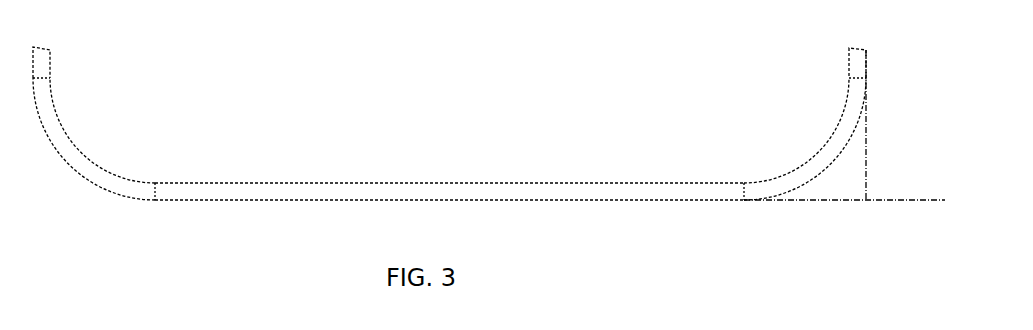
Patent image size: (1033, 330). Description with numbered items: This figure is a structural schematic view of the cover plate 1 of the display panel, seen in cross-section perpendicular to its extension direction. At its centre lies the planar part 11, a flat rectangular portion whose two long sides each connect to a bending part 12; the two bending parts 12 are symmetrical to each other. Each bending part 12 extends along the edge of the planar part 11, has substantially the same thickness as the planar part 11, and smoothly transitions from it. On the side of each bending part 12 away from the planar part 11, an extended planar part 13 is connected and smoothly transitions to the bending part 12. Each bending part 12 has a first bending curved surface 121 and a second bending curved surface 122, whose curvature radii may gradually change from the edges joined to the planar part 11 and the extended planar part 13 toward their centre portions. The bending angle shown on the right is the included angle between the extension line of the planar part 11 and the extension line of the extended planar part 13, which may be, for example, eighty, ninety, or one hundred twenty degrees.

The cover plate 1 is at (413, 86).
The planar part 11 is at (302, 190).
The bending part 12 is at (449, 152).
The first bending curved surface 121 is at (86, 151).
The second bending curved surface 122 is at (70, 172).
The extended planar part 13 is at (40, 63).